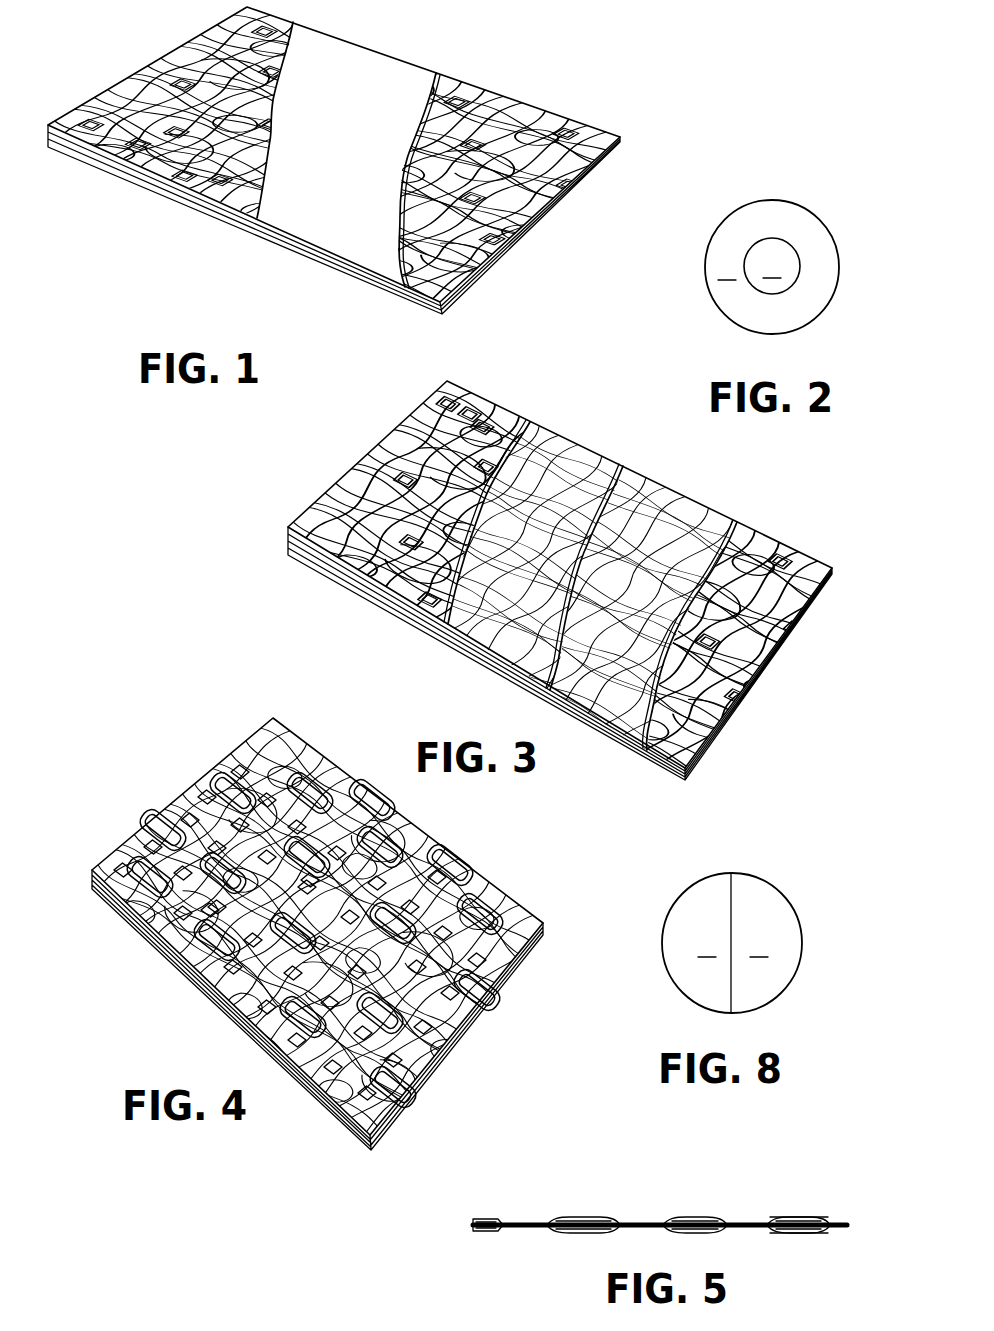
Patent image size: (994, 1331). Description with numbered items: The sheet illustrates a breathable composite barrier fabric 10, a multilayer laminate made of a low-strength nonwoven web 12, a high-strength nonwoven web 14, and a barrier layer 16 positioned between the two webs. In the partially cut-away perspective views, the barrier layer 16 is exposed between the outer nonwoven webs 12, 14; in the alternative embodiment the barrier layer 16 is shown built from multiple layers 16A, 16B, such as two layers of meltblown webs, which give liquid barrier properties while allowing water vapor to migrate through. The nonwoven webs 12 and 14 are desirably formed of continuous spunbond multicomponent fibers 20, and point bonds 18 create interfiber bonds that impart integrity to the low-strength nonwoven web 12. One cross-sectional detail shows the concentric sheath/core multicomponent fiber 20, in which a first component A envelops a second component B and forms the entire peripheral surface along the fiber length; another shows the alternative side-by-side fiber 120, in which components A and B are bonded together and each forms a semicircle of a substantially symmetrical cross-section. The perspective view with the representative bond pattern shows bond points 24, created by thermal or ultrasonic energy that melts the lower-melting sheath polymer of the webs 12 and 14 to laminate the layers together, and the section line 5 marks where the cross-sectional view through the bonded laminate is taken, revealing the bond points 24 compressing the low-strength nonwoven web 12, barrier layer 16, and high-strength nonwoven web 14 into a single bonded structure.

In FIG. 1, the breathable composite barrier fabric 10 is at (324, 284).
In FIG. 3, the breathable composite barrier fabric 10 is at (388, 637).
In FIG. 1, the low-strength nonwoven web 12 is at (212, 77).
In FIG. 3, the low-strength nonwoven web 12 is at (404, 475).
In FIG. 5, the low-strength nonwoven web 12 is at (822, 1216).
In FIG. 1, the high-strength nonwoven web 14 is at (431, 197).
In FIG. 3, the high-strength nonwoven web 14 is at (699, 676).
In FIG. 5, the high-strength nonwoven web 14 is at (818, 1233).
In FIG. 1, the barrier layer 16 is at (321, 158).
In FIG. 5, the barrier layer 16 is at (850, 1225).
In FIG. 3, the barrier layer 16A is at (503, 568).
In FIG. 3, the barrier layer 16B is at (610, 620).
In FIG. 1, the point bonds 18 is at (200, 184).
In FIG. 3, the point bonds 18 is at (452, 396).
In FIG. 4, the point bonds 18 is at (412, 855).
In FIG. 2, the multicomponent fiber 20 is at (684, 297).
In FIG. 4, the bond points 24 is at (460, 862).
In FIG. 5, the bond points 24 is at (745, 1222).
In FIG. 8, the fiber 120 is at (815, 990).
In FIG. 4, the section line 5 is at (198, 770).